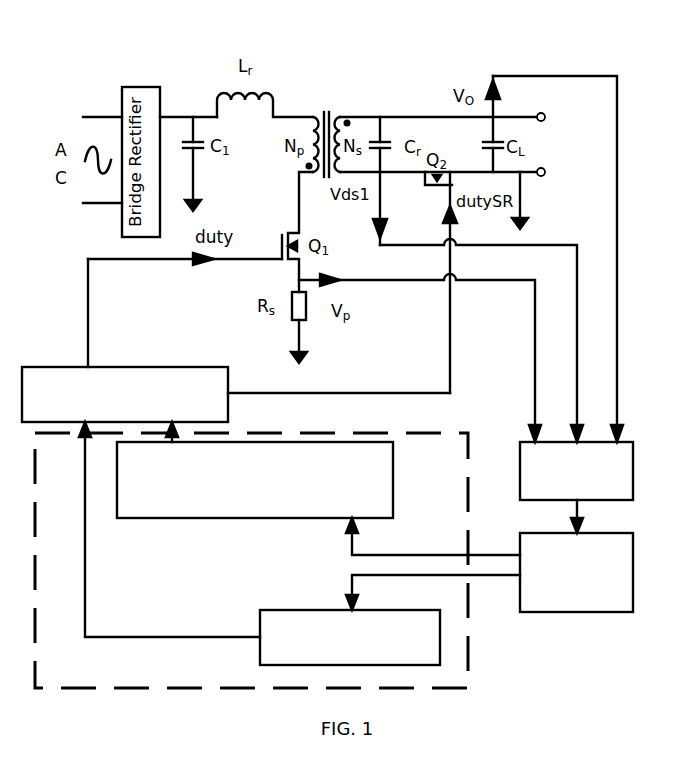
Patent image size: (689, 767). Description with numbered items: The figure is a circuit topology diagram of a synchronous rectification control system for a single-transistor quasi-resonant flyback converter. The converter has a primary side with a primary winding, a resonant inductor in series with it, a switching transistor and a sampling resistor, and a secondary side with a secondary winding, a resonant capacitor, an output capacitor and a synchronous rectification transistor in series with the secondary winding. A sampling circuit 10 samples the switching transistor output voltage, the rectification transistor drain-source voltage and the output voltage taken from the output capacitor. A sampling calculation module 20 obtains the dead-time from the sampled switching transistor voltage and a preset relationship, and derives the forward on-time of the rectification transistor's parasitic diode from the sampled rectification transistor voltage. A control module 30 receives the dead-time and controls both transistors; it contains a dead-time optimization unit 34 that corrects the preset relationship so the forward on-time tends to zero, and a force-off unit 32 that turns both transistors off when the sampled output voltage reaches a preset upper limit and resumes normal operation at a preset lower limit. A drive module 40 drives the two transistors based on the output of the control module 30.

The sampling circuit 10 is at (522, 441).
The sampling calculation module 20 is at (533, 533).
The control module 30 is at (333, 433).
The force-off unit 32 is at (270, 610).
The dead-time optimization unit 34 is at (218, 519).
The drive module 40 is at (118, 366).